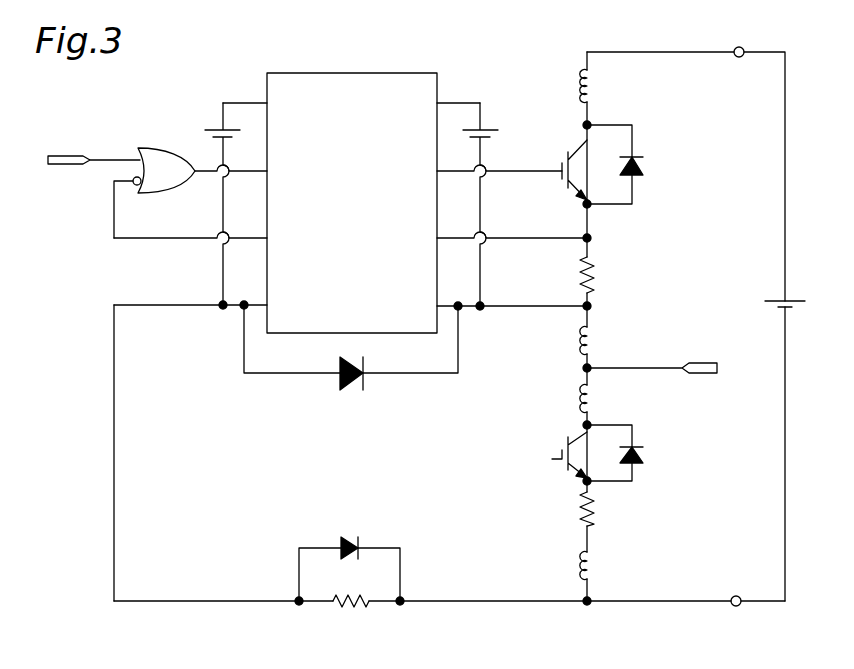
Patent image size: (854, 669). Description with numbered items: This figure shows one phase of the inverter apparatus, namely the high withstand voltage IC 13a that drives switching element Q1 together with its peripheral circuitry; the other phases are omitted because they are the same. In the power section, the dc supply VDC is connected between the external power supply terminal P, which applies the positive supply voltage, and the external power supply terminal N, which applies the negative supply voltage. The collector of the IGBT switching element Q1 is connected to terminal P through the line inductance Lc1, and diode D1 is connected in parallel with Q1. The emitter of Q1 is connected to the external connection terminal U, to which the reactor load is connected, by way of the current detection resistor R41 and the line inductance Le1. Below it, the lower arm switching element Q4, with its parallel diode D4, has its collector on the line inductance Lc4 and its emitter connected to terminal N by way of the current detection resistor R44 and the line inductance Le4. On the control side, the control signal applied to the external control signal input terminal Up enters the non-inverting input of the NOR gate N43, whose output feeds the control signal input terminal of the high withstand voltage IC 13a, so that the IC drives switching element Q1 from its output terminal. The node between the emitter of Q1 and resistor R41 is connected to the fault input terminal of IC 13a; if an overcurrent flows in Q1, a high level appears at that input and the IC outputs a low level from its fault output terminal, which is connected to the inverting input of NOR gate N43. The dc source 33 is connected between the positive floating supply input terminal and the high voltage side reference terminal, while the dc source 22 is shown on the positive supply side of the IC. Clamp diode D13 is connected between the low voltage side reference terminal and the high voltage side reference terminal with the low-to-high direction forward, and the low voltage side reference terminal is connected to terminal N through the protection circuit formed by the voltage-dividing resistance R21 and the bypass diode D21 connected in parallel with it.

The high withstand voltage IC 13a is at (356, 72).
The dc source 22 is at (207, 128).
The dc source 33 is at (492, 128).
The NOR gate N43 is at (160, 194).
The clamp diode D13 is at (348, 392).
The bypass diode D21 is at (350, 534).
The voltage-dividing resistance R21 is at (350, 608).
The switching element Q1 is at (562, 150).
The switching element Q4 is at (562, 440).
The diode D1 is at (645, 165).
The diode D4 is at (645, 455).
The current detection resistor R41 is at (598, 268).
The current detection resistor R44 is at (598, 503).
The line inductance Lc1 is at (598, 88).
The line inductance Le1 is at (598, 343).
The line inductance Lc4 is at (598, 401).
The line inductance Le4 is at (598, 564).
The external power supply terminal P is at (737, 41).
The external power supply terminal N is at (735, 590).
The external connection terminal U is at (660, 370).
The external control signal input terminal Up is at (79, 161).
The dc supply VDC is at (803, 298).